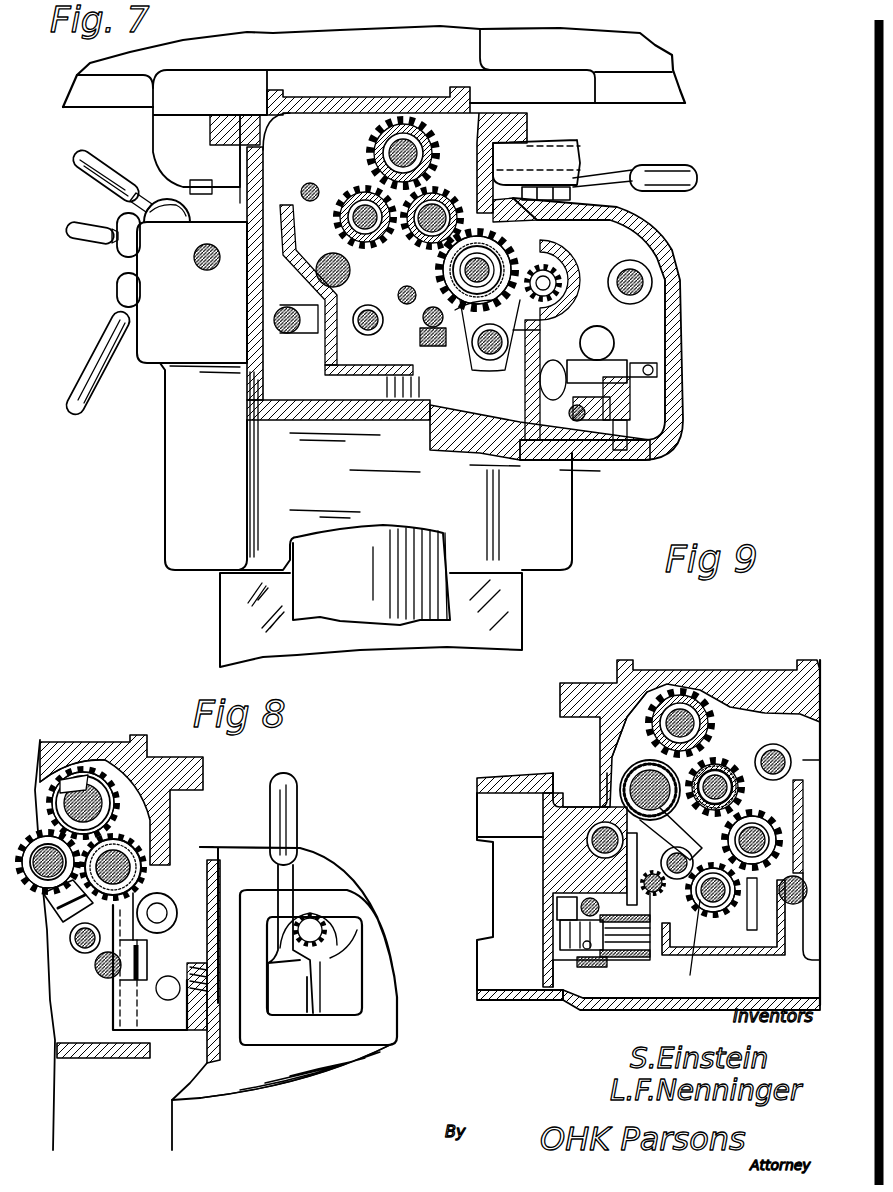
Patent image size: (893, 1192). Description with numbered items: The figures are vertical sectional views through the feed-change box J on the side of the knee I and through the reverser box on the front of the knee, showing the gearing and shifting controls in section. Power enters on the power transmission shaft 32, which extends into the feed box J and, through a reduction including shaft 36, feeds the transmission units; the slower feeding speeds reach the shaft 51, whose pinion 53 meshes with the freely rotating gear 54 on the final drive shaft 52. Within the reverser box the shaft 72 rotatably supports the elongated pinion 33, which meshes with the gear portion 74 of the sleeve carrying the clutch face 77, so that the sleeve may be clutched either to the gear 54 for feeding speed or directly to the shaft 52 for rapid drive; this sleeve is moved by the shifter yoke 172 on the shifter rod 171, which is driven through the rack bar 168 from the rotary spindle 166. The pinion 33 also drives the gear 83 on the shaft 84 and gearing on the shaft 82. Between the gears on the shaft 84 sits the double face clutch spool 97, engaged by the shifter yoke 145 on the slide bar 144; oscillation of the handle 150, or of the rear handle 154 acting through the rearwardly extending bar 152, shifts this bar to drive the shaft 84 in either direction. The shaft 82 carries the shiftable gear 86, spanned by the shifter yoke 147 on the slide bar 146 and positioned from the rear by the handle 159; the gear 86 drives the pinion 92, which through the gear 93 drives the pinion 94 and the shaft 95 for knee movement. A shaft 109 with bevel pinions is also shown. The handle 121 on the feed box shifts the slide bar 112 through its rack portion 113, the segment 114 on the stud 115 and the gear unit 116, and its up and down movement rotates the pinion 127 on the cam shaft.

In FIG. 7, the shaft 84 is at (366, 128).
In FIG. 8, the shaft 84 is at (75, 780).
In FIG. 9, the shaft 84 is at (677, 700).
In FIG. 7, the gear 83 is at (392, 120).
In FIG. 7, the shaft 82 is at (350, 195).
In FIG. 8, the shaft 82 is at (80, 948).
In FIG. 9, the shaft 82 is at (717, 768).
In FIG. 7, the final drive shaft 52 is at (488, 232).
In FIG. 8, the final drive shaft 52 is at (167, 912).
In FIG. 9, the final drive shaft 52 is at (543, 837).
In FIG. 7, the clutch face 77 is at (487, 263).
In FIG. 7, the gear portion 74 is at (530, 257).
In FIG. 7, the gear 54 is at (553, 277).
In FIG. 7, the shaft 51 is at (610, 258).
In FIG. 7, the pinion 53 is at (615, 272).
In FIG. 7, the pinion 127 is at (643, 280).
In FIG. 7, the knee I is at (680, 302).
In FIG. 7, the handle 150 is at (93, 180).
In FIG. 7, the slide bar 144 is at (363, 140).
In FIG. 9, the slide bar 144 is at (773, 744).
In FIG. 7, the rearwardly extending bar 152 is at (200, 268).
In FIG. 7, the handle 159 is at (90, 253).
In FIG. 7, the shaft 109 is at (274, 317).
In FIG. 9, the shaft 109 is at (793, 902).
In FIG. 7, the rotary spindle 166 is at (418, 330).
In FIG. 8, the rotary spindle 166 is at (97, 1050).
In FIG. 7, the handle 154 is at (93, 363).
In FIG. 7, the shaft 95 is at (360, 337).
In FIG. 9, the shaft 95 is at (712, 895).
In FIG. 7, the shifter rod 171 is at (497, 362).
In FIG. 9, the shifter rod 171 is at (567, 903).
In FIG. 7, the shifter yoke 172 is at (490, 312).
In FIG. 7, the shaft 36 is at (553, 377).
In FIG. 7, the power transmission shaft 32 is at (614, 337).
In FIG. 7, the gear unit 116 is at (643, 383).
In FIG. 8, the gear unit 116 is at (167, 1001).
In FIG. 7, the stud 115 is at (617, 398).
In FIG. 7, the segment 114 is at (630, 413).
In FIG. 7, the rack portion 113 is at (633, 450).
In FIG. 7, the slide bar 112 is at (580, 425).
In FIG. 7, the shaft 72 is at (420, 257).
In FIG. 8, the shaft 72 is at (140, 852).
In FIG. 8, the shifter yoke 145 is at (33, 780).
In FIG. 9, the shifter yoke 145 is at (727, 710).
In FIG. 8, the double face clutch spool 97 is at (97, 792).
In FIG. 8, the shifter yoke 147 is at (117, 845).
In FIG. 8, the elongated pinion 33 is at (122, 855).
In FIG. 8, the handle 121 is at (298, 802).
In FIG. 8, the slide bar 146 is at (93, 970).
In FIG. 9, the slide bar 146 is at (659, 832).
In FIG. 8, the rack bar 168 is at (140, 951).
In FIG. 9, the rack bar 168 is at (627, 866).
In FIG. 8, the feed-change box J is at (352, 1062).
In FIG. 9, the shiftable gear 86 is at (735, 760).
In FIG. 9, the pinion 92 is at (752, 893).
In FIG. 9, the pinion 94 is at (717, 908).
In FIG. 9, the gear 93 is at (765, 947).